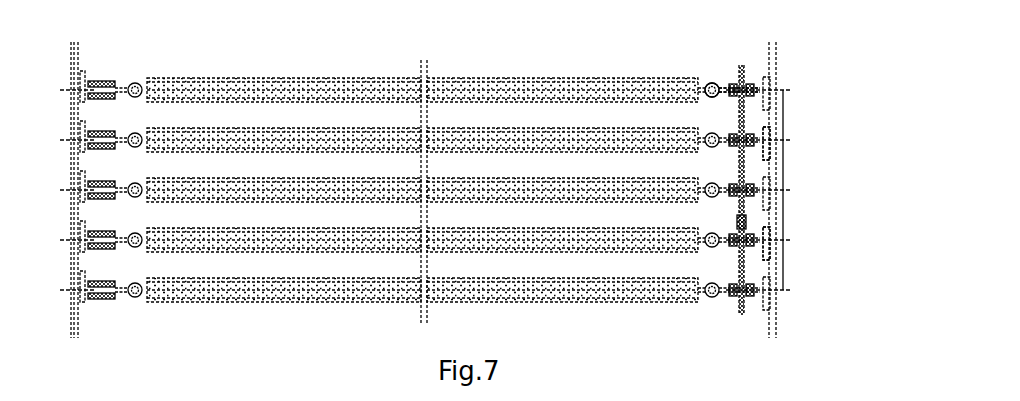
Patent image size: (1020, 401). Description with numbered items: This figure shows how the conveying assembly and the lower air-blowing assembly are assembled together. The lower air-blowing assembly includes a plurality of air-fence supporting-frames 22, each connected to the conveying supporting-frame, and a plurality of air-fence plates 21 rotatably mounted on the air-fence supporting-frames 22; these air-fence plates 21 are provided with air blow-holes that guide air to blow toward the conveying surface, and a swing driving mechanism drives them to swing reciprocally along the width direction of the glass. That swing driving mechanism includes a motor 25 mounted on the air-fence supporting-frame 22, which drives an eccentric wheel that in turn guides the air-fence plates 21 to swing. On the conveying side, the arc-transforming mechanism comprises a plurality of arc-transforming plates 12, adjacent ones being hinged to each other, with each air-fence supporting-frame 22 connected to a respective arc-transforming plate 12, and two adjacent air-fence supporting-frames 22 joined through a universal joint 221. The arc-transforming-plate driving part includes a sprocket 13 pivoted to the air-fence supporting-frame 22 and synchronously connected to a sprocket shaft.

The arc-transforming plate 12 is at (770, 249).
The sprocket 13 is at (772, 168).
The air-fence plate 21 is at (748, 82).
The air-fence supporting-frame 22 is at (767, 130).
The universal joint 221 is at (745, 222).
The motor 25 is at (742, 72).